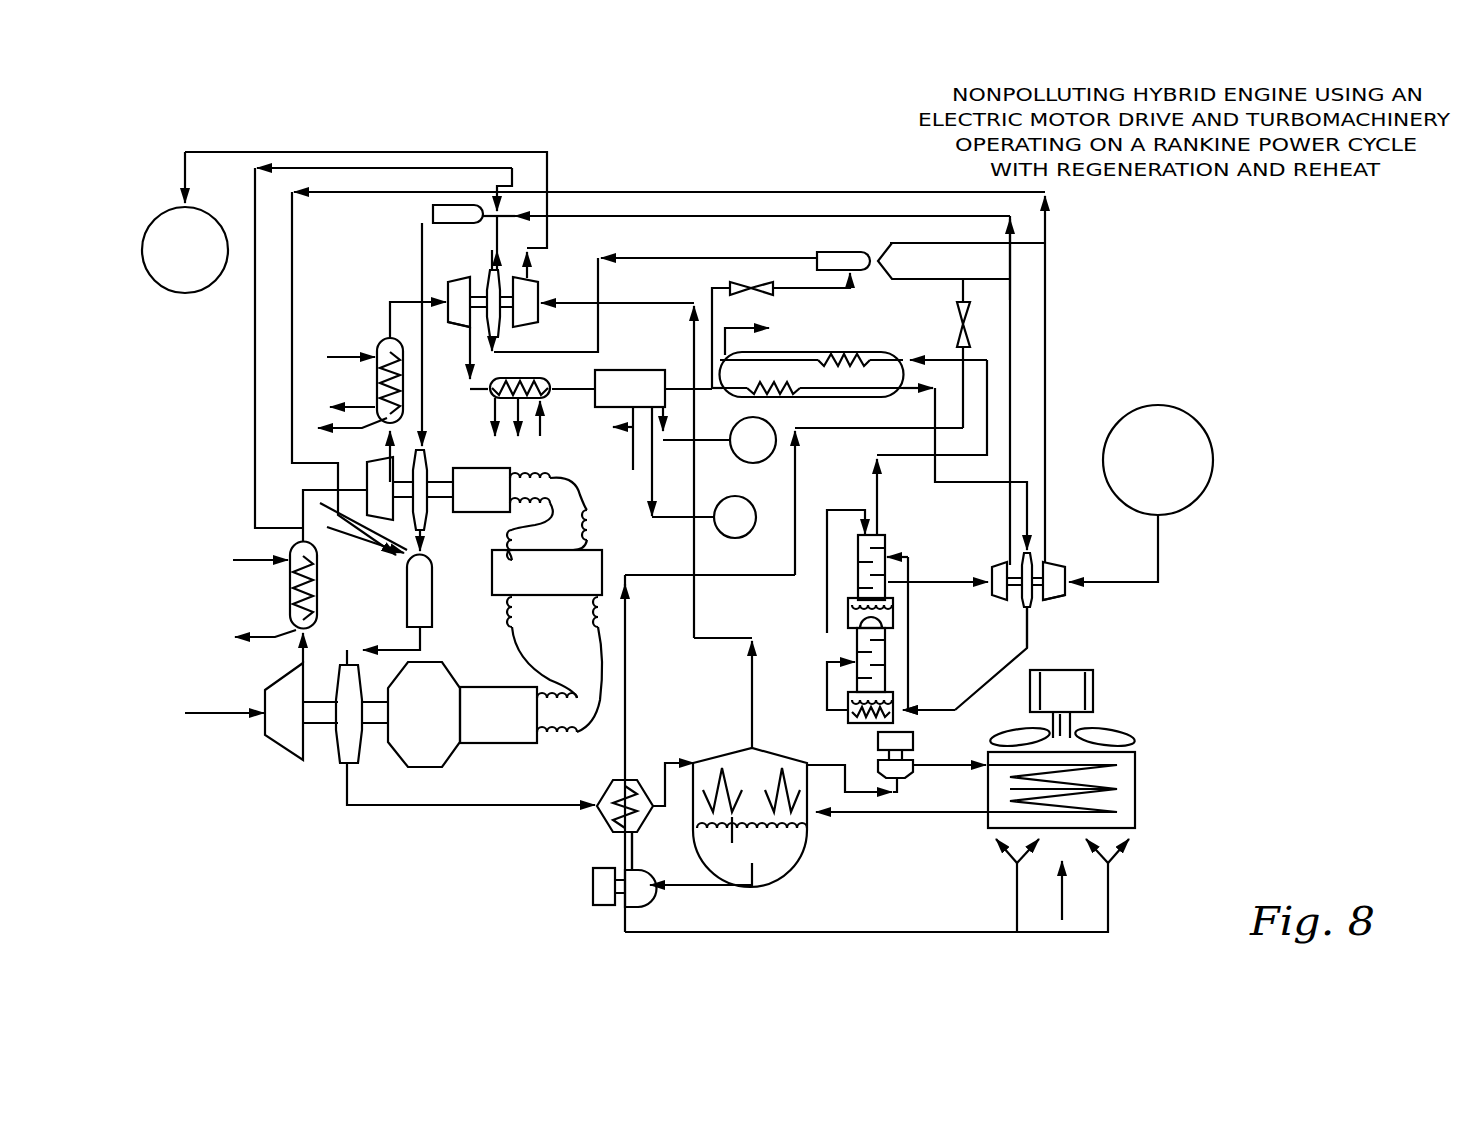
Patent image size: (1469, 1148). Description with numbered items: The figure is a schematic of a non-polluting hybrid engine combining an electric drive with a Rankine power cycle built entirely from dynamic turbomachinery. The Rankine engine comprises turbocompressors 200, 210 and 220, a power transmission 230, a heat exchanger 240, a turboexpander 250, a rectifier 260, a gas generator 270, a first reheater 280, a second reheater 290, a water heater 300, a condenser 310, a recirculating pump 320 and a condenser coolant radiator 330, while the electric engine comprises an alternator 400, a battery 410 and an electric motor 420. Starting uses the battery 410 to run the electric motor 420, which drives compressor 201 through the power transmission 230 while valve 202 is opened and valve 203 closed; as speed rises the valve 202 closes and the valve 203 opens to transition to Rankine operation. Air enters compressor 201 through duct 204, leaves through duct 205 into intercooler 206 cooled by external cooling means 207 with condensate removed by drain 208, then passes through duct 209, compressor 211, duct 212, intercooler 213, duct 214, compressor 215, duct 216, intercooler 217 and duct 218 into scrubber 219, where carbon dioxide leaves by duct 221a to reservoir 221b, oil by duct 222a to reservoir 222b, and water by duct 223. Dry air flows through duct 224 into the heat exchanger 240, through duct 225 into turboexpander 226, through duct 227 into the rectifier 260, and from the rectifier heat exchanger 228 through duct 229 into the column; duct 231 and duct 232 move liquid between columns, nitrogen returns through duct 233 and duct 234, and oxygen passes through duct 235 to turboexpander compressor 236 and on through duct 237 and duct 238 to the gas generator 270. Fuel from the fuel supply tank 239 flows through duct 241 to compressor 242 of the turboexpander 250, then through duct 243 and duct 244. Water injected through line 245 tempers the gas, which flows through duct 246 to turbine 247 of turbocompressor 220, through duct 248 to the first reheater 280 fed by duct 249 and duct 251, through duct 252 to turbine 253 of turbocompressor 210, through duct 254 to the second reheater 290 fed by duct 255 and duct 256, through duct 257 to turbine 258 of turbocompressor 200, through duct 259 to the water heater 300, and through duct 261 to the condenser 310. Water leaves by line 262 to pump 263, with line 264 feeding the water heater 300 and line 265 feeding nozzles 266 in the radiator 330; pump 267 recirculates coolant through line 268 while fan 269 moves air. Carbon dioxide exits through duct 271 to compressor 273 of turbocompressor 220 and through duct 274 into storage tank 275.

The turbocompressor 200 is at (322, 767).
The compressor 201 is at (292, 683).
The valve 202 is at (736, 286).
The valve 203 is at (957, 326).
The duct 204 is at (210, 712).
The duct 205 is at (307, 642).
The intercooler 206 is at (288, 592).
The external cooling means 207 is at (356, 357).
The drain 208 is at (330, 427).
The duct 209 is at (328, 490).
The turbocompressor 210 is at (441, 468).
The compressor 211 is at (327, 527).
The duct 212 is at (386, 448).
The intercooler 213 is at (376, 381).
The duct 214 is at (390, 300).
The compressor 215 is at (455, 328).
The duct 216 is at (468, 373).
The intercooler 217 is at (506, 378).
The duct 218 is at (582, 385).
The scrubber 219 is at (622, 370).
The turbocompressor 220 is at (481, 264).
The duct 221a is at (714, 458).
The reservoir 221b is at (772, 425).
The duct 222a is at (652, 518).
The reservoir 222b is at (756, 533).
The duct 223 is at (632, 460).
The duct 224 is at (714, 395).
The duct 225 is at (934, 398).
The turboexpander 226 is at (1022, 600).
The duct 227 is at (1024, 648).
The rectifier heat exchanger 228 is at (853, 725).
The duct 229 is at (826, 686).
The power transmission 230 is at (469, 671).
The duct 231 is at (890, 680).
The duct 232 is at (847, 613).
The duct 233 is at (876, 483).
The duct 234 is at (744, 328).
The duct 235 is at (936, 580).
The turboexpander compressor 236 is at (991, 595).
The duct 237 is at (1013, 302).
The duct 238 is at (895, 279).
The fuel supply tank 239 is at (1206, 448).
The heat exchanger 240 is at (821, 345).
The duct 241 is at (1160, 556).
The compressor 242 is at (1049, 562).
The duct 243 is at (1047, 345).
The duct 244 is at (1040, 241).
The line 245 is at (628, 674).
The duct 246 is at (702, 257).
The turbine 247 is at (500, 330).
The duct 248 is at (500, 242).
The duct 249 is at (732, 190).
The turboexpander 250 is at (1041, 606).
The duct 251 is at (806, 220).
The duct 252 is at (420, 264).
The turbine 253 is at (413, 510).
The duct 254 is at (428, 535).
The duct 255 is at (292, 264).
The duct 256 is at (254, 382).
The duct 257 is at (400, 648).
The turbine 258 is at (365, 760).
The duct 259 is at (416, 806).
The rectifier 260 is at (886, 520).
The duct 261 is at (670, 763).
The line 262 is at (690, 887).
The pump 263 is at (641, 876).
The line 264 is at (634, 856).
The line 265 is at (828, 930).
The nozzles 266 is at (1010, 863).
The pump 267 is at (906, 780).
The line 268 is at (993, 741).
The fan 269 is at (1096, 686).
The gas generator 270 is at (815, 252).
The duct 271 is at (695, 614).
The compressor 273 is at (538, 290).
The duct 274 is at (550, 180).
The storage tank 275 is at (175, 293).
The first reheater 280 is at (420, 204).
The second reheater 290 is at (400, 580).
The water heater 300 is at (594, 829).
The condenser 310 is at (714, 738).
The recirculating pump 320 is at (590, 881).
The condenser coolant radiator 330 is at (1147, 775).
The alternator 400 is at (481, 490).
The battery 410 is at (547, 602).
The electric motor 420 is at (500, 751).